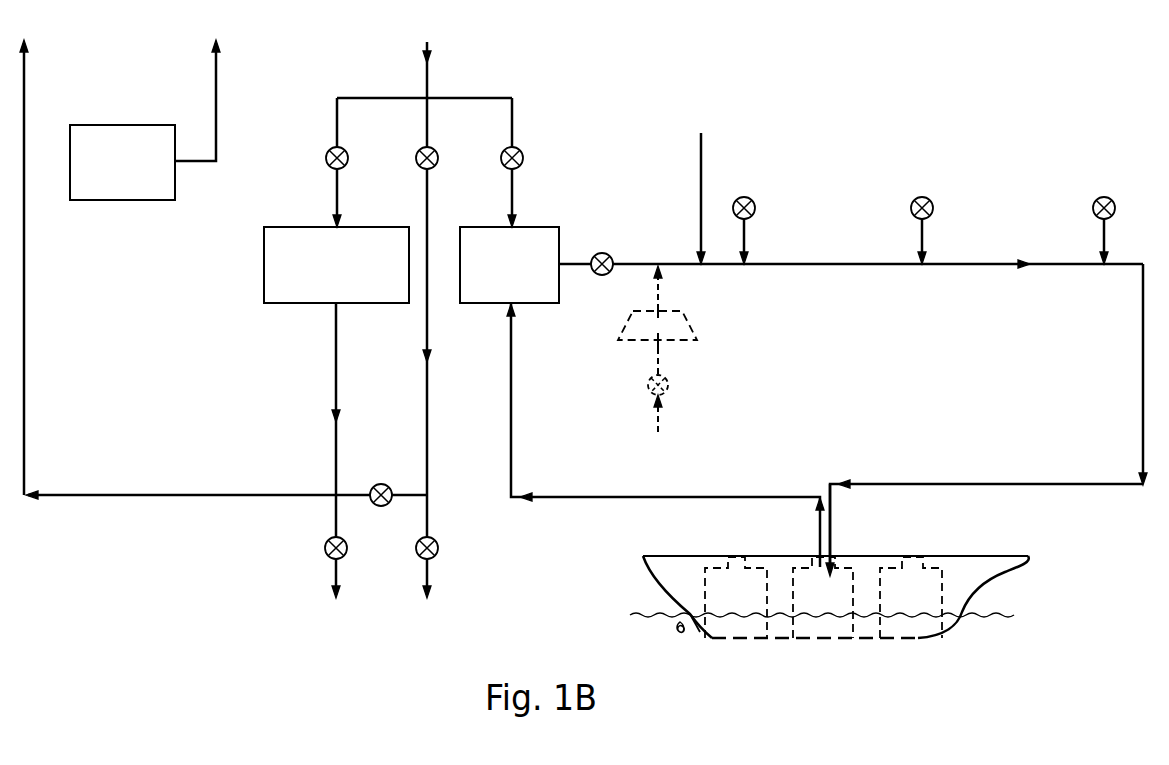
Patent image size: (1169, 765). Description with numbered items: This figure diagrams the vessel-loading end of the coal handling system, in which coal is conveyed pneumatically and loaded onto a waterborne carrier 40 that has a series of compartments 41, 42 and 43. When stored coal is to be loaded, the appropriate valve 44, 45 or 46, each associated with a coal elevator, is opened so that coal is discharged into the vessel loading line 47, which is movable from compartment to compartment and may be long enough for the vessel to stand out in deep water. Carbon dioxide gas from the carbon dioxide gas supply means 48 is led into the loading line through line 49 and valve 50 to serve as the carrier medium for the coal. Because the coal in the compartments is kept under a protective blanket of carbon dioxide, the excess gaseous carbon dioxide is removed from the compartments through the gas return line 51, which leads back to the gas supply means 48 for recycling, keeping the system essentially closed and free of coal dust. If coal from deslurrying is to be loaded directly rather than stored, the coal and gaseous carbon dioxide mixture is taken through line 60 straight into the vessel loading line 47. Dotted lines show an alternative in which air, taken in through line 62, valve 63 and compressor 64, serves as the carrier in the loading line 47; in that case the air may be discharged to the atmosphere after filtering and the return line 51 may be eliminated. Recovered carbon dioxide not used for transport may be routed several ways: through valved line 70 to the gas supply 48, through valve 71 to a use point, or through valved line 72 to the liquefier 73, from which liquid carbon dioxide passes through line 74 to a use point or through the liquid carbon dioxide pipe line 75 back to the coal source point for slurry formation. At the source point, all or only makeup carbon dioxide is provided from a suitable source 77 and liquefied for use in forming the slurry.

The waterborne carrier 40 is at (976, 555).
The compartment 41 is at (738, 626).
The compartment 42 is at (822, 637).
The compartment 43 is at (902, 637).
The valve 44 is at (748, 197).
The valve 45 is at (926, 197).
The valve 46 is at (1108, 197).
The vessel loading line 47 is at (1060, 270).
The carbon dioxide gas supply means 48 is at (481, 295).
The line 49 is at (623, 264).
The valve 50 is at (601, 275).
The gas return line 51 is at (786, 497).
The line 60 is at (699, 166).
The line 62 is at (663, 425).
The valve 63 is at (670, 382).
The compressor 64 is at (690, 325).
The valved line 70 is at (515, 188).
The valve 71 is at (426, 185).
The valved line 72 is at (335, 185).
The liquefier 73 is at (275, 254).
The line 74 is at (334, 390).
The liquid carbon dioxide pipe line 75 is at (28, 266).
The source 77 is at (103, 128).